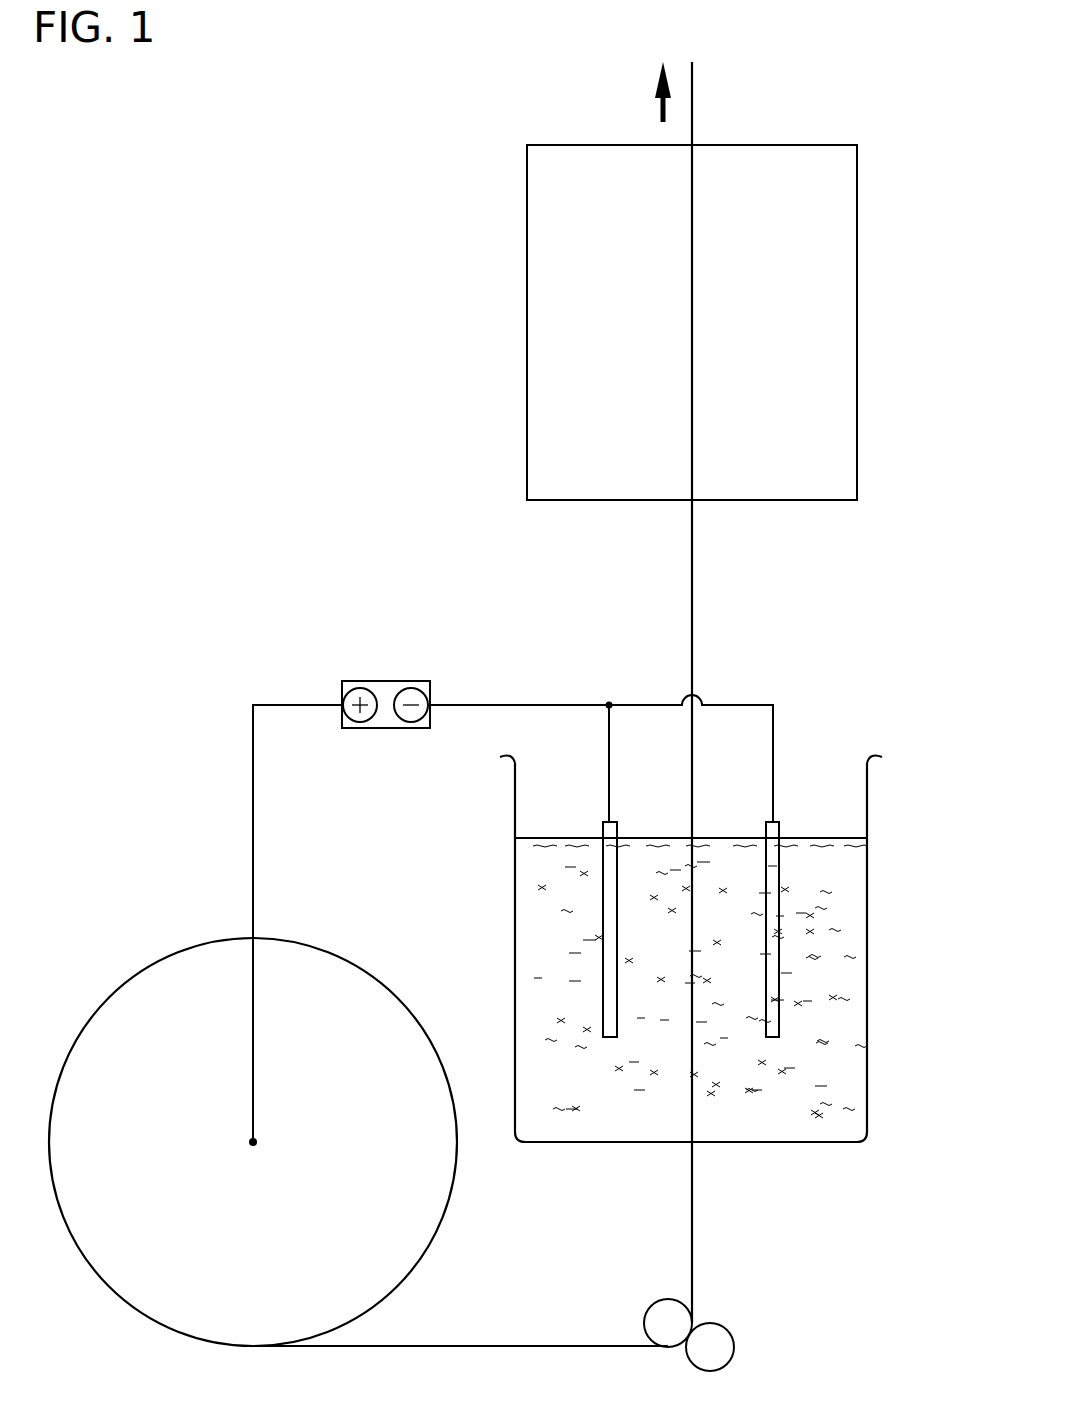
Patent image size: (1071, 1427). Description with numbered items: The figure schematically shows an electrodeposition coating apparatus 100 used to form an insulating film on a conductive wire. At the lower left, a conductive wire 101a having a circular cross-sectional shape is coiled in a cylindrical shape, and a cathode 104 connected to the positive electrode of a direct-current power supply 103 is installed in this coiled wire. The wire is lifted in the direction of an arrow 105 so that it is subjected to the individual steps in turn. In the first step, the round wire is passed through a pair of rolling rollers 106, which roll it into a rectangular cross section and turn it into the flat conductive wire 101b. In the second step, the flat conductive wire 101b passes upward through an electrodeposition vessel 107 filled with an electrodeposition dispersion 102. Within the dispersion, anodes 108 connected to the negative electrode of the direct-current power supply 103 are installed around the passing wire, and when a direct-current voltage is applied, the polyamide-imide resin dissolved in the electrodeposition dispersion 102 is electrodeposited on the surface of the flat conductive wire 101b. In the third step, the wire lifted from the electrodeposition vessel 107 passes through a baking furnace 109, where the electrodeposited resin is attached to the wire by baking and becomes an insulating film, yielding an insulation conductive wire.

The electrodeposition coating apparatus 100 is at (202, 152).
The conductive wire having a circular cross-sectional shape 101a is at (139, 974).
The flat conductive wire 101b is at (690, 580).
The electrodeposition dispersion 102 is at (825, 968).
The direct-current power supply 103 is at (388, 680).
The cathode 104 is at (250, 1142).
The arrow 105 is at (655, 100).
The pair of rolling rollers 106 is at (735, 1345).
The electrodeposition vessel 107 is at (750, 1143).
The anodes 108 is at (598, 828).
The baking furnace 109 is at (568, 365).